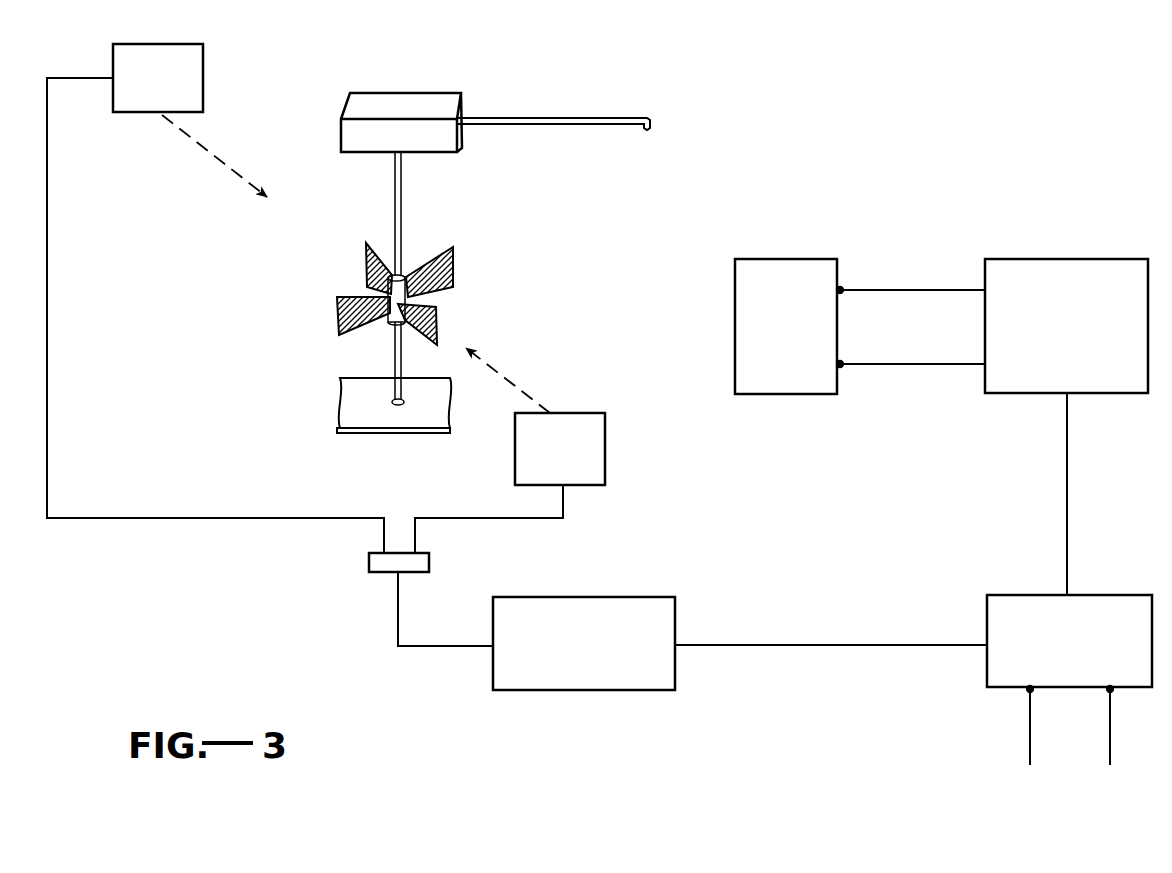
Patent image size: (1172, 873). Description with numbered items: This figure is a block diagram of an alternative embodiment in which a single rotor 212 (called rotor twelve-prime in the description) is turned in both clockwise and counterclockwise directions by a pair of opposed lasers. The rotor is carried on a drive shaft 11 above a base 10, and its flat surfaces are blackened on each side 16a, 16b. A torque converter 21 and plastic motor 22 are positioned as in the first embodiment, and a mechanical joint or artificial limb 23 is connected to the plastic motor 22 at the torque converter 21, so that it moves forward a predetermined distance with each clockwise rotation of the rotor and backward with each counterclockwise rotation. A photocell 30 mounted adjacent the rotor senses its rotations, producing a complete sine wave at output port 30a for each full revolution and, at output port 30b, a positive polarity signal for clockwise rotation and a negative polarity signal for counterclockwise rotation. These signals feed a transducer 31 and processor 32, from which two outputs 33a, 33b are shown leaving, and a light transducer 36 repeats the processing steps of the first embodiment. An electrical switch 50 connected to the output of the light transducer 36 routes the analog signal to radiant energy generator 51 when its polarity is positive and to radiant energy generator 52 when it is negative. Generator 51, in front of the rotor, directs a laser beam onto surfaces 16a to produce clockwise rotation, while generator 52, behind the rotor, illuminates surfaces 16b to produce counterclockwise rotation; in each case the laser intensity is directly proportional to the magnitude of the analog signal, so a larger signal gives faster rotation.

The radiant energy generator 52 is at (203, 86).
The torque converter 21 is at (397, 92).
The mechanical joint or artificial limb 23 is at (632, 117).
The drive shaft 11 is at (396, 342).
The radiant energy absorbing side 16a is at (366, 252).
The radiant energy reflecting surface 16b is at (453, 278).
The plastic motor 22 is at (278, 287).
The rotor assembly 212 is at (525, 277).
The base 10 is at (363, 440).
The radiant energy generator 51 is at (582, 485).
The electrical switch 50 is at (369, 558).
The light transducer 36 is at (590, 690).
The photocell 30 is at (798, 395).
The photocell output port 30a is at (842, 290).
The output port 30b is at (842, 364).
The transducer 31 is at (1028, 395).
The processor 32 is at (1105, 595).
The output line 33a is at (1028, 692).
The output line 33b is at (1113, 692).